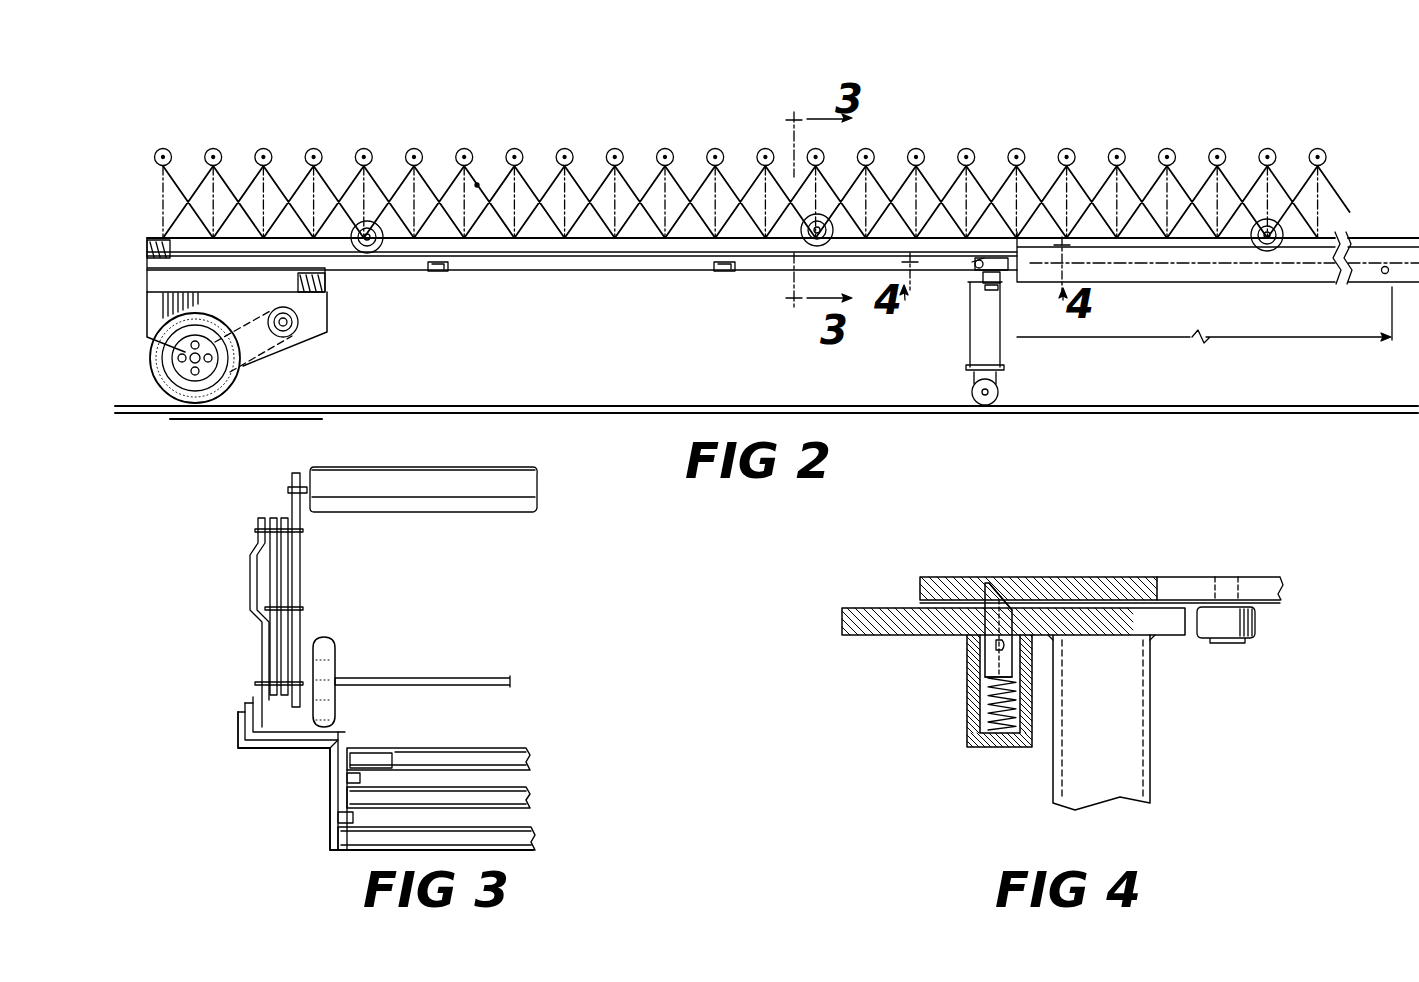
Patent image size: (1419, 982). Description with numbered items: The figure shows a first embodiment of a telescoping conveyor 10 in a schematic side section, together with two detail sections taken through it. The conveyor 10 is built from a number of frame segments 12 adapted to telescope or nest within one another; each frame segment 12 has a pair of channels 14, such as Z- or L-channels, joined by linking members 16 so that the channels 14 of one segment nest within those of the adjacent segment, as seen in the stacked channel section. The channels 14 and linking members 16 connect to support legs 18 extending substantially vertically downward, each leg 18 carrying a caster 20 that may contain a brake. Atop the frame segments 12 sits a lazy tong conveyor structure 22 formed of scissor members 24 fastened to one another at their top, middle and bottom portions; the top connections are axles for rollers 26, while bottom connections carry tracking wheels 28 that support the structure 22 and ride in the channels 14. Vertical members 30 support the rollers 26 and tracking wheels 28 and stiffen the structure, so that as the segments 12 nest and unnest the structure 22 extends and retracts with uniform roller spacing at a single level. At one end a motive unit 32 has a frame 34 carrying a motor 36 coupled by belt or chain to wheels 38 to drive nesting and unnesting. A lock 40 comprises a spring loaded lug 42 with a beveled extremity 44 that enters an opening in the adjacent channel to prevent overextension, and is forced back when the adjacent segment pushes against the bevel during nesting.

In FIG. 2, the conveyor 10 is at (316, 106).
In FIG. 3, the conveyor 10 is at (240, 498).
In FIG. 2, the frame segment 12 is at (1366, 228).
In FIG. 3, the frame segment 12 is at (312, 737).
In FIG. 4, the frame segment 12 is at (1156, 563).
In FIG. 2, the channel 14 is at (506, 270).
In FIG. 3, the channel 14 is at (333, 820).
In FIG. 4, the channel 14 is at (887, 636).
In FIG. 2, the linking member 16 is at (438, 272).
In FIG. 3, the linking member 16 is at (513, 755).
In FIG. 4, the linking member 16 is at (1132, 708).
In FIG. 2, the support leg 18 is at (975, 330).
In FIG. 2, the caster 20 is at (1003, 392).
In FIG. 2, the lazy tong conveyor structure 22 is at (288, 172).
In FIG. 3, the lazy tong conveyor structure 22 is at (250, 583).
In FIG. 2, the scissor member 24 is at (460, 183).
In FIG. 3, the scissor member 24 is at (262, 612).
In FIG. 2, the roller 26 is at (627, 145).
In FIG. 3, the roller 26 is at (438, 475).
In FIG. 2, the tracking wheel 28 is at (828, 220).
In FIG. 3, the tracking wheel 28 is at (325, 637).
In FIG. 2, the vertical member 30 is at (477, 185).
In FIG. 2, the motive unit 32 is at (336, 308).
In FIG. 2, the frame 34 is at (320, 330).
In FIG. 2, the motor 36 is at (290, 338).
In FIG. 2, the wheel 38 is at (240, 380).
In FIG. 2, the lock 40 is at (973, 266).
In FIG. 3, the lock 40 is at (368, 755).
In FIG. 4, the lock 40 is at (1004, 579).
In FIG. 4, the spring loaded lug 42 is at (993, 636).
In FIG. 4, the beveled extremity 44 is at (1002, 582).